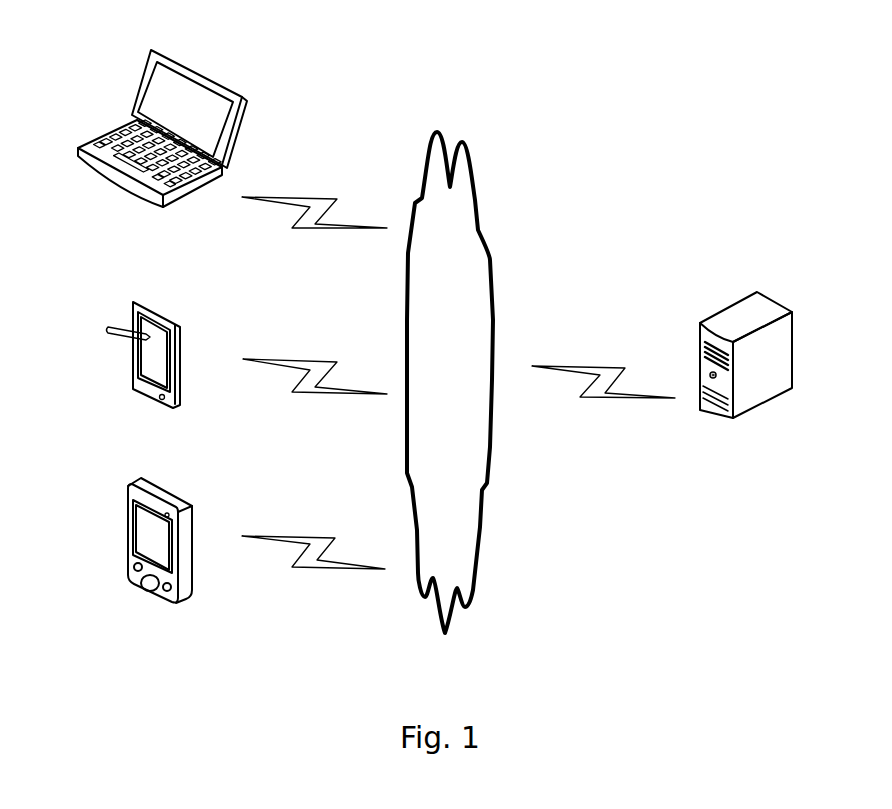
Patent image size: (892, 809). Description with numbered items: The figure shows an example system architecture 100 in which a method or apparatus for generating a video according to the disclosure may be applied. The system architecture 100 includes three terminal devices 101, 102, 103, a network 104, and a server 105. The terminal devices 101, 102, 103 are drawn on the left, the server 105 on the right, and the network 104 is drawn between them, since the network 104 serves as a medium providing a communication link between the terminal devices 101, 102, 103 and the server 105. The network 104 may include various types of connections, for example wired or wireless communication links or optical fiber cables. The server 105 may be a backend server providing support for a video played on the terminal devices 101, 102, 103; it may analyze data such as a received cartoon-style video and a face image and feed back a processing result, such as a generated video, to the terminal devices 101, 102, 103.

The system architecture 100 is at (702, 38).
The terminal device 101 is at (160, 562).
The terminal device 102 is at (144, 375).
The terminal device 103 is at (162, 149).
The network 104 is at (450, 382).
The server 105 is at (746, 380).